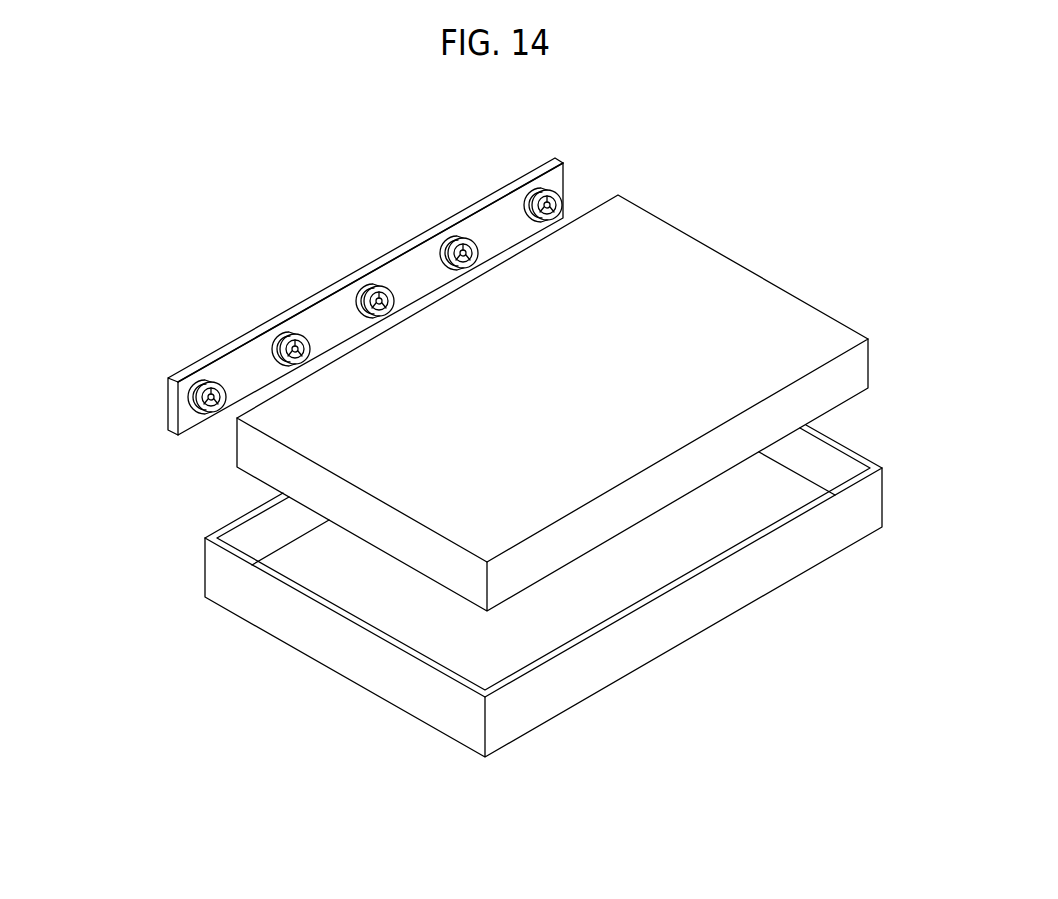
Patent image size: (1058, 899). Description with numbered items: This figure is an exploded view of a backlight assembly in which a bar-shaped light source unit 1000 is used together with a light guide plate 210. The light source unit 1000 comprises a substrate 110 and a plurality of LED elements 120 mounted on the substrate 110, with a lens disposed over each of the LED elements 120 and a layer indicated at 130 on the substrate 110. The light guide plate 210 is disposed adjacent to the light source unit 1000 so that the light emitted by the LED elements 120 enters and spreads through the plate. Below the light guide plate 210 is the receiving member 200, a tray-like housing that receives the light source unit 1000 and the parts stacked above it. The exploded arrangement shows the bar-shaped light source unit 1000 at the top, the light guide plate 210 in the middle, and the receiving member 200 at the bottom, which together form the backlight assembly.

The light source unit 1000 is at (110, 305).
The substrate 110 is at (170, 406).
The LED elements 120 is at (203, 376).
The reflective layer 130 is at (265, 330).
The light guide plate 210 is at (859, 363).
The receiving member 200 is at (868, 512).